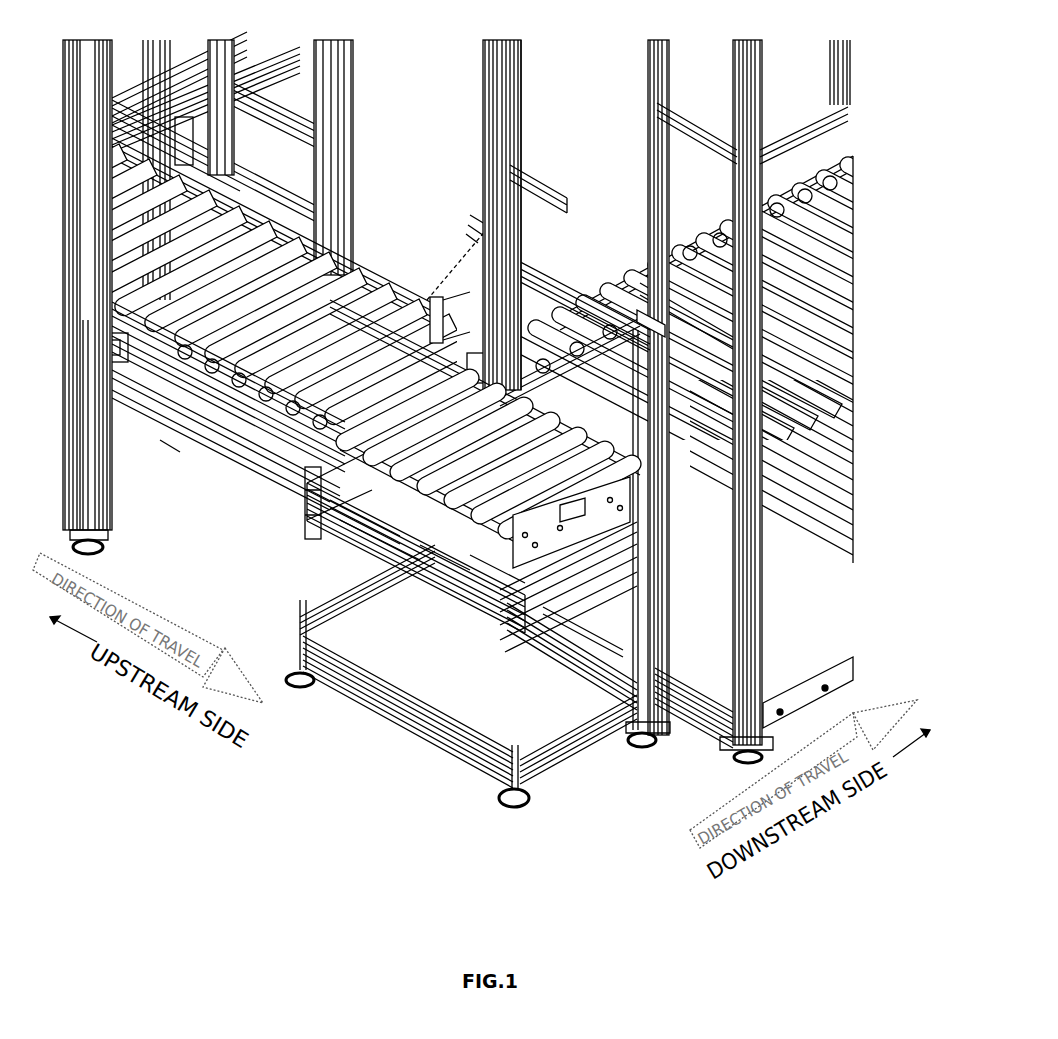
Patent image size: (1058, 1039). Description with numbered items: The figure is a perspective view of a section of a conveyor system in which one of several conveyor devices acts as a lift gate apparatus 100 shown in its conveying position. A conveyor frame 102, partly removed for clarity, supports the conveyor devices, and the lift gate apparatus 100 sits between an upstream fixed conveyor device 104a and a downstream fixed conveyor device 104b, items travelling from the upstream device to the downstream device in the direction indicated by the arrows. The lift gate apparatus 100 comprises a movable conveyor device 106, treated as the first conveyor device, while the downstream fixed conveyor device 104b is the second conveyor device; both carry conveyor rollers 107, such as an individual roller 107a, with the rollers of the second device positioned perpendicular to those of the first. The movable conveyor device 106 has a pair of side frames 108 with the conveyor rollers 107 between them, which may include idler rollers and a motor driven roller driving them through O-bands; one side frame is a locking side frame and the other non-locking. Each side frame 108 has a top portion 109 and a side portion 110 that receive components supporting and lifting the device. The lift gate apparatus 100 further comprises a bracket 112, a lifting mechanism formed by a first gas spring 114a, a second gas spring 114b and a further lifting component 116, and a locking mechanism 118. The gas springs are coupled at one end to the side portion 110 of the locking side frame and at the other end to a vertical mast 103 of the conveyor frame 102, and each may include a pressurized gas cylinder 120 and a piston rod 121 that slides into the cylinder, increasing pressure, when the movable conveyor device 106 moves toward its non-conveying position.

The lift gate apparatus 100 is at (503, 205).
The conveyor frame 102 is at (579, 275).
The vertical mast 103 is at (517, 72).
The upstream fixed conveyor device 104a is at (243, 320).
The downstream fixed conveyor device 104b is at (430, 595).
The movable conveyor device 106 is at (220, 398).
The conveyor rollers 107 is at (541, 645).
The frame member 107a is at (160, 445).
The pair of side frames 108 is at (391, 302).
The top portion 109 is at (352, 270).
The side portion 110 is at (206, 400).
The bracket 112 is at (304, 517).
The first gas spring 114a is at (475, 218).
The second gas spring 114b is at (289, 446).
The lifting mechanism 116 is at (138, 374).
The locking mechanism 118 is at (118, 372).
The pressurized gas cylinder 120 is at (520, 242).
The piston rod 121 is at (456, 290).